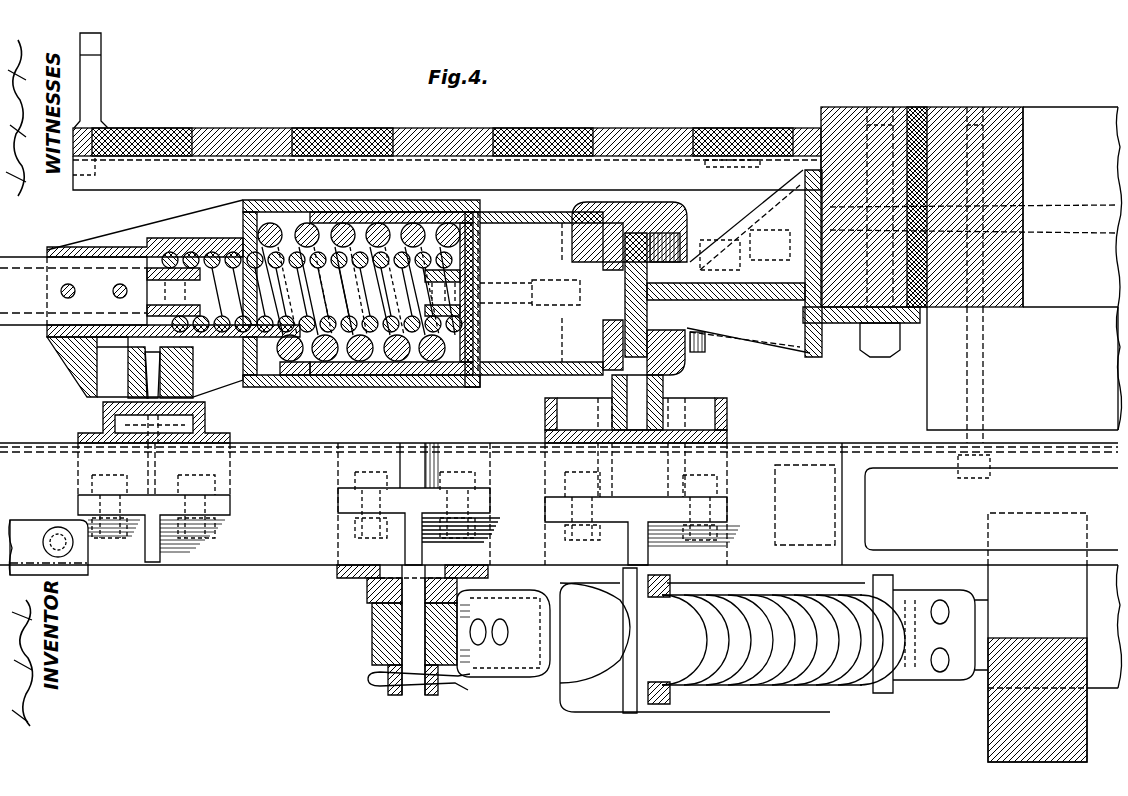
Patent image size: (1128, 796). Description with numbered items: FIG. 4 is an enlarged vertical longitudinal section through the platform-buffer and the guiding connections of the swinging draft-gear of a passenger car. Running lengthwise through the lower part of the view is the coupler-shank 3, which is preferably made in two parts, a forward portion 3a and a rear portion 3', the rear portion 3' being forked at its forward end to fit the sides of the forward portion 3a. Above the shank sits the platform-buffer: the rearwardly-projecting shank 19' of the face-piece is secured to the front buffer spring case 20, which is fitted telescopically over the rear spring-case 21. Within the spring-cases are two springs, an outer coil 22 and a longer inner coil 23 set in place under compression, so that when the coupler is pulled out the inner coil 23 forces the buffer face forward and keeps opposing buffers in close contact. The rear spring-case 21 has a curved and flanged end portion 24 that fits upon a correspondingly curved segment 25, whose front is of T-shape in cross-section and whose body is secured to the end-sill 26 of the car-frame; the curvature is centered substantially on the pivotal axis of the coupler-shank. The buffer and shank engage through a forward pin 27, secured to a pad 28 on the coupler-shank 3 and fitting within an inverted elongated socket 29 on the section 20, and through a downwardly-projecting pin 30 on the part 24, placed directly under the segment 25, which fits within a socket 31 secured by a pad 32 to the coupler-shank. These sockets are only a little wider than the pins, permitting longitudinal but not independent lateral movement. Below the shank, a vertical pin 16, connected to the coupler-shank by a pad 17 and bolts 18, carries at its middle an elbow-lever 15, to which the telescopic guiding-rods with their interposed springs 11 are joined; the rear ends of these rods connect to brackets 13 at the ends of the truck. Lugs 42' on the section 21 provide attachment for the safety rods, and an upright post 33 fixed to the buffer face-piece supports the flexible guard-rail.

The coupler-shank 3 is at (559, 493).
The forward portion of coupler-shank 3a is at (551, 505).
The rear portion of coupler-shank 3' is at (991, 510).
The springs 11 is at (768, 663).
The brackets 13 is at (982, 668).
The elbow-lever 15 is at (372, 636).
The vertical pin 16 is at (372, 615).
The pad 17 is at (419, 504).
The bolts 18 is at (360, 478).
The rearwardly-projecting shank 19' is at (100, 291).
The front buffer spring case 20 is at (263, 293).
The rear spring-case 21 is at (550, 293).
The outer spring coil 22 is at (295, 362).
The inner spring coil 23 is at (462, 262).
The curved and flanged end portion 24 is at (688, 215).
The curved segment 25 is at (647, 316).
The end-sill 26 is at (862, 112).
The forward pin 27 is at (148, 360).
The pad 28 is at (86, 512).
The inverted elongated socket 29 is at (145, 367).
The downwardly-projecting pin 30 is at (627, 406).
The socket 31 is at (636, 417).
The pad 32 is at (615, 515).
The upright post 33 is at (92, 42).
The lugs 42' is at (548, 311).